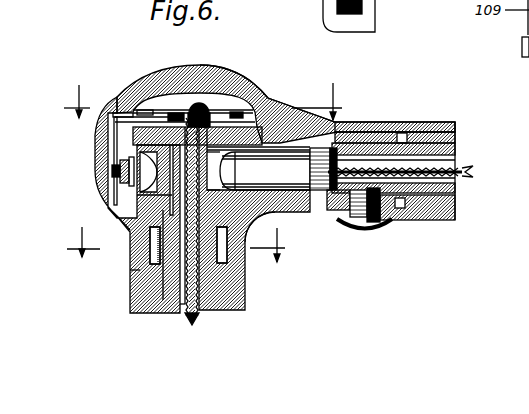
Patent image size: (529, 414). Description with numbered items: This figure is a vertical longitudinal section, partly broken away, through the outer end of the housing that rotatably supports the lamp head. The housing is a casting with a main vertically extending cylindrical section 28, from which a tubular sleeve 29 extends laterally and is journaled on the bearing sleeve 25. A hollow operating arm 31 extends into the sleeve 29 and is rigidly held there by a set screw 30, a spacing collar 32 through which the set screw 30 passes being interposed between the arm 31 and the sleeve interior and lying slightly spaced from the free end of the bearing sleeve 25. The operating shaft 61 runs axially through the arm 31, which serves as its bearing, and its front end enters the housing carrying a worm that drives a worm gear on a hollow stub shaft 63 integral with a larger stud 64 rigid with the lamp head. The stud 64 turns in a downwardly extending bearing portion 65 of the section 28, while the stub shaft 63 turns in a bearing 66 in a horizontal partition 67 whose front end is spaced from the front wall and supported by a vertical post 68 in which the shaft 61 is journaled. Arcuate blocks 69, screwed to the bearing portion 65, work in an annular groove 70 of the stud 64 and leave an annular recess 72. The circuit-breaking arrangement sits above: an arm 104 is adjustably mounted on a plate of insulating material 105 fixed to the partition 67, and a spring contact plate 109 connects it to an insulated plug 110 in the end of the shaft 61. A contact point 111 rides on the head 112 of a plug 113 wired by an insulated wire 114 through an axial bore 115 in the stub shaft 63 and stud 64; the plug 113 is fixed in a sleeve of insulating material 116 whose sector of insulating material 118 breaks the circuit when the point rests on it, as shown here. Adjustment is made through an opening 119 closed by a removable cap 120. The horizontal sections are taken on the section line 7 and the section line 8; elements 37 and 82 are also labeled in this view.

The section line 7 is at (205, 101).
The section line 8 is at (179, 244).
The bearing sleeve 25 is at (456, 137).
The cylindrical section 28 is at (100, 142).
The tubular sleeve 29 is at (418, 123).
The set screw 30 is at (365, 236).
The operating arm 31 is at (330, 200).
The spacing collar 32 is at (352, 133).
The sleeve 37 is at (453, 127).
The operating shaft 61 is at (453, 187).
The hollow stub shaft 63 is at (121, 225).
The stud 64 is at (131, 278).
The bearing portion 65 is at (150, 251).
The bearing 66 is at (133, 110).
The horizontal partition 67 is at (237, 80).
The vertical post 68 is at (114, 113).
The arcuate blocks 69 is at (228, 252).
The annular groove 70 is at (246, 288).
The annular recess 72 is at (223, 311).
The cam member 82 is at (162, 178).
The arm 104 is at (163, 125).
The plate of insulating material 105 is at (259, 98).
The spring contact plate 109 is at (121, 170).
The insulated plug 110 is at (132, 173).
The contact point 111 is at (186, 108).
The head 112 is at (178, 115).
The plug 113 is at (232, 172).
The insulated wire 114 is at (190, 325).
The axial bore 115 is at (180, 305).
The sleeve of insulating material 116 is at (163, 300).
The sector of insulating material 118 is at (205, 102).
The opening 119 is at (111, 97).
The removable cap 120 is at (256, 88).